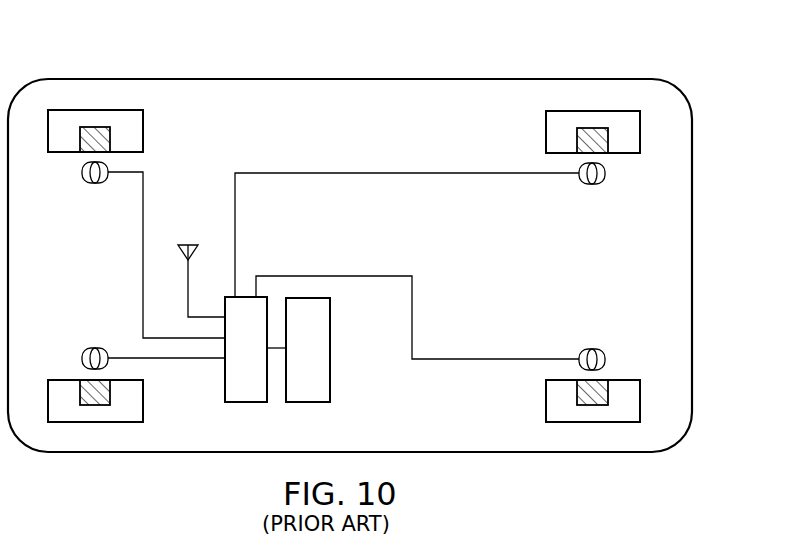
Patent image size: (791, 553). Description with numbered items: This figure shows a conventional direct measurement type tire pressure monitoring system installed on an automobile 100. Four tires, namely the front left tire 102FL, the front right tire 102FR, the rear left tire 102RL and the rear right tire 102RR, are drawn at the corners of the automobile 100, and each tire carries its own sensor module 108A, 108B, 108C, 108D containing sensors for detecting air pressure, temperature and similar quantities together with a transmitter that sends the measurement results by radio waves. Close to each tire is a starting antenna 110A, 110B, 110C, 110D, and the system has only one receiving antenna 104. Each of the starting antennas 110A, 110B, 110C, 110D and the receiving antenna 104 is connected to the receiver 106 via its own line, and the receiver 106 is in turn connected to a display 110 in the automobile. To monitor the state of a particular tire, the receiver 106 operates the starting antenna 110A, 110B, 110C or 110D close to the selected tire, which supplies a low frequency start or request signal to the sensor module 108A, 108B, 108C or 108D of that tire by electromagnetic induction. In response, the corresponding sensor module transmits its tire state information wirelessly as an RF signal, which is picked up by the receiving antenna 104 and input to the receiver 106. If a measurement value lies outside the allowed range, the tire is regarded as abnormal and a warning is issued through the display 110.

The automobile 100 is at (272, 79).
The front right tire 102FR is at (143, 120).
The rear right tire 102RR is at (546, 121).
The front left tire 102FL is at (143, 412).
The rear left tire 102RL is at (546, 413).
The sensor module 108A is at (80, 398).
The sensor module 108B is at (80, 132).
The sensor module 108C is at (608, 398).
The sensor module 108D is at (608, 133).
The starting antenna 110A is at (94, 347).
The starting antenna 110B is at (93, 184).
The starting antenna 110C is at (594, 347).
The starting antenna 110D is at (594, 185).
The receiving antenna 104 is at (185, 243).
The receiver 106 is at (224, 378).
The display 110 is at (330, 370).